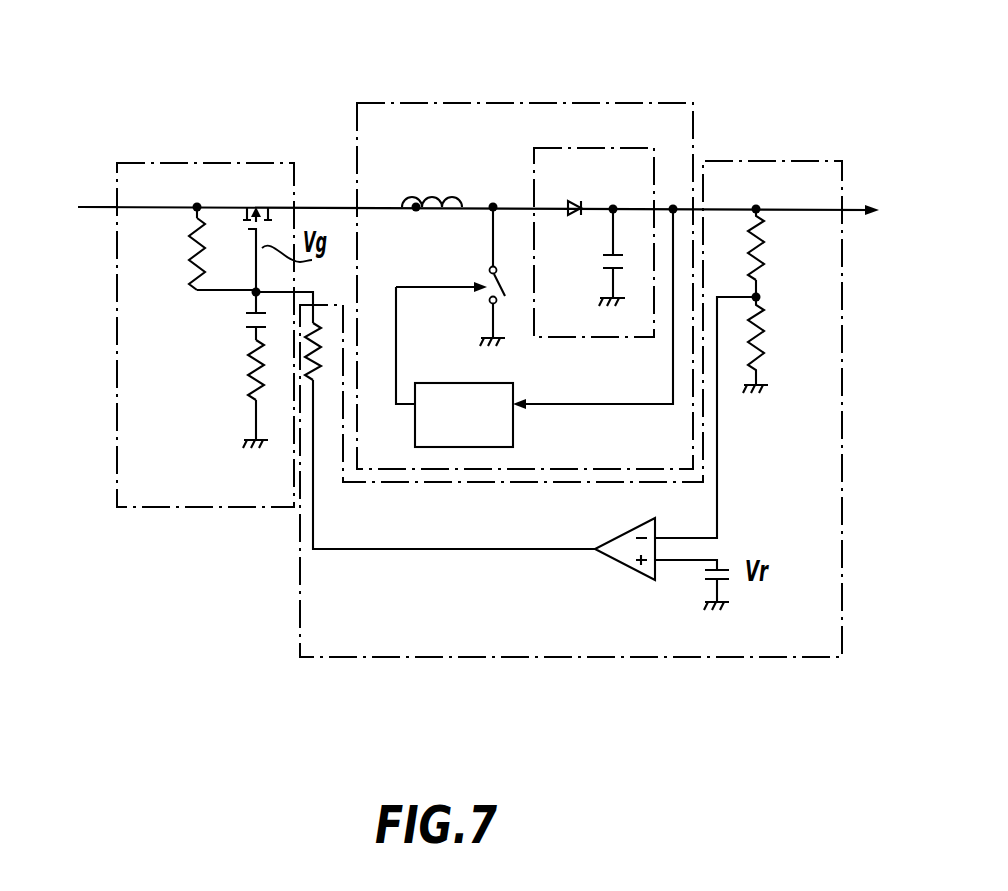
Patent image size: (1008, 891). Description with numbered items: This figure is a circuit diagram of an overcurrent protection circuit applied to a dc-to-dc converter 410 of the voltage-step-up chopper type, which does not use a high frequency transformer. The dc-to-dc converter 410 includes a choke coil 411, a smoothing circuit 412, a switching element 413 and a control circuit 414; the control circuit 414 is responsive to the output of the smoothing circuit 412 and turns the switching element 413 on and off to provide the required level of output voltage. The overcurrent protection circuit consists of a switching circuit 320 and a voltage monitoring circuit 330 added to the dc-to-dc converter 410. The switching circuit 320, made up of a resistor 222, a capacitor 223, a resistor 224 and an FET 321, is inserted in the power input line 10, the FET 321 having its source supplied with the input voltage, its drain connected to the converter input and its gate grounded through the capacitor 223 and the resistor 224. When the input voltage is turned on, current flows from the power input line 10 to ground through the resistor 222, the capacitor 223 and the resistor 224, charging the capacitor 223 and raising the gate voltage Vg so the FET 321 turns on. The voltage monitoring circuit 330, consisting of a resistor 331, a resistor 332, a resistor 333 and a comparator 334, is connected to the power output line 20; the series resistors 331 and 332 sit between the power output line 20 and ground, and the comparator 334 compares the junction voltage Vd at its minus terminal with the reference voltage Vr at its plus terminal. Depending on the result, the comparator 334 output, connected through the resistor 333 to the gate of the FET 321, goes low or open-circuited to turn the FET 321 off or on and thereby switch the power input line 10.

The power input line 10 is at (94, 207).
The power output line 20 is at (855, 209).
The resistor 222 is at (197, 256).
The capacitor 223 is at (252, 330).
The resistor 224 is at (251, 388).
The switching circuit 320 is at (125, 507).
The FET 321 is at (242, 207).
The voltage monitoring circuit 330 is at (663, 657).
The resistor 331 is at (768, 255).
The resistor 332 is at (770, 343).
The resistor 333 is at (628, 568).
The comparator 334 is at (326, 354).
The dc-to-dc converter 410 is at (567, 103).
The choke coil 411 is at (416, 202).
The smoothing circuit 412 is at (534, 153).
The switching element 413 is at (411, 233).
The control circuit 414 is at (513, 418).